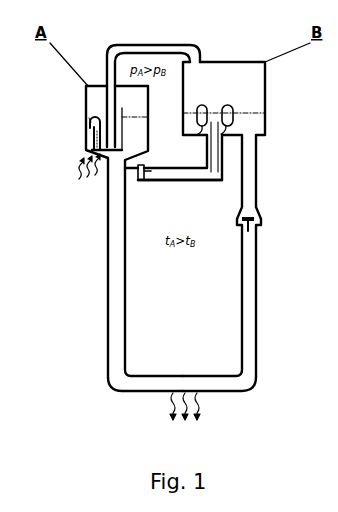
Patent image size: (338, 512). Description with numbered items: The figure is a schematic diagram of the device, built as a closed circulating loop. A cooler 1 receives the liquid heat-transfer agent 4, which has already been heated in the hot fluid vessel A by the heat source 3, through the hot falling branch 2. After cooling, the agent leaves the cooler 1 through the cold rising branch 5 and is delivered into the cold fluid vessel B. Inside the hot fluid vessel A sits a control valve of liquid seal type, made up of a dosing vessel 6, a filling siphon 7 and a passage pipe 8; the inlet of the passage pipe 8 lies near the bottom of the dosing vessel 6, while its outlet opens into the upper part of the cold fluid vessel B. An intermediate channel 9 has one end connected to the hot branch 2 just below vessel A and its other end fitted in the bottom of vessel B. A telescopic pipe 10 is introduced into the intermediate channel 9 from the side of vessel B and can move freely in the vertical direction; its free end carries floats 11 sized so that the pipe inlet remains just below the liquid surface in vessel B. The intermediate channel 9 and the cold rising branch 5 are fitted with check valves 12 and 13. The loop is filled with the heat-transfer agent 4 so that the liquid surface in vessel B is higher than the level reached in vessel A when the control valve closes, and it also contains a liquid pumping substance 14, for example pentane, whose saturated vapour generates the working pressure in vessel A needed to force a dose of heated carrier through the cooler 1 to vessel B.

The cooler 1 is at (197, 407).
The hot falling branch 2 is at (108, 312).
The heat source 3 is at (81, 167).
The liquid heat-transfer agent 4 is at (258, 124).
The cold rising branch 5 is at (257, 320).
The dosing vessel 6 is at (93, 137).
The filling siphon 7 is at (89, 115).
The passage pipe 8 is at (107, 58).
The intermediate channel 9 is at (178, 180).
The telescopic pipe 10 is at (220, 143).
The floats 11 is at (232, 108).
The check valve 12 is at (130, 180).
The check valve 13 is at (260, 217).
The liquid pumping substance 14 is at (90, 120).